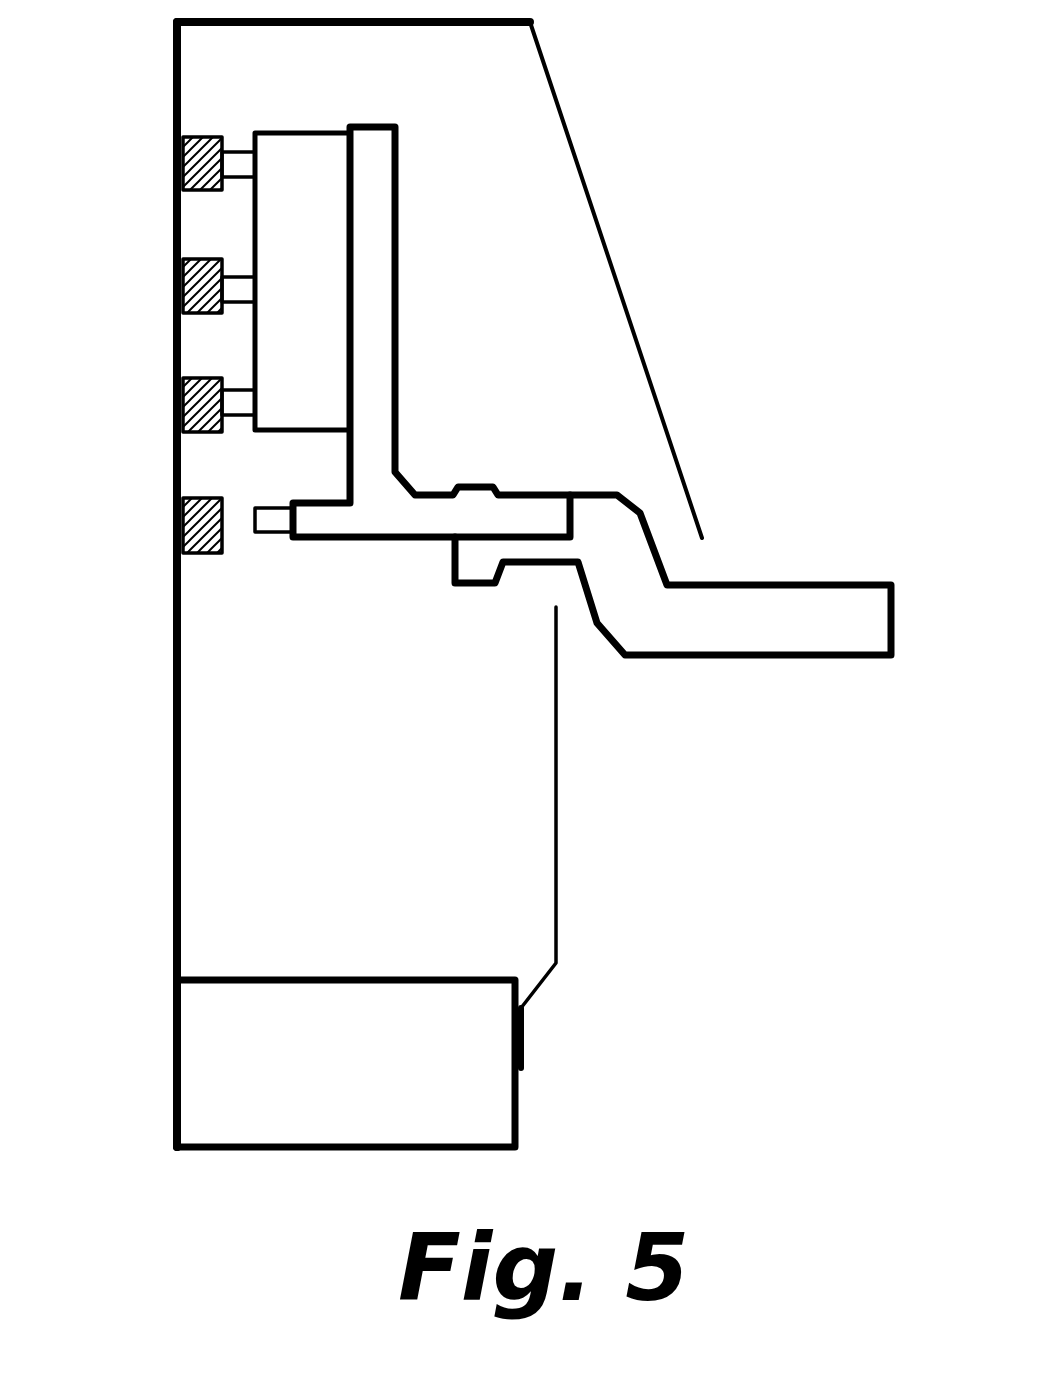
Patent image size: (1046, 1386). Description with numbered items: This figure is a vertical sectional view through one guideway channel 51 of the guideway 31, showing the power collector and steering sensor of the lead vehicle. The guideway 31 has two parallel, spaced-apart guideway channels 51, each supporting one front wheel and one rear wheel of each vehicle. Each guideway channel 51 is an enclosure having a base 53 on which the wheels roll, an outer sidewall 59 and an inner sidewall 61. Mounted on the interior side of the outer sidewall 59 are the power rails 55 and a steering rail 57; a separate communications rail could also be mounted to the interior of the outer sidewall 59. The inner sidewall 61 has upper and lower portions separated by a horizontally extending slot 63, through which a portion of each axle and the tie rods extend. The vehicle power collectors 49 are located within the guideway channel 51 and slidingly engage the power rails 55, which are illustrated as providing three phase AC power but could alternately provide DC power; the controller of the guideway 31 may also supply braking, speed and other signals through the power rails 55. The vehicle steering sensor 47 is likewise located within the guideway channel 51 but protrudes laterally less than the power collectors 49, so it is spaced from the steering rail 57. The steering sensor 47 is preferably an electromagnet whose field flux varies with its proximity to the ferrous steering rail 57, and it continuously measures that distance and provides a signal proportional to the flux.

The guideway 31 is at (680, 207).
The steering sensor 47 is at (272, 538).
The power collector 49 is at (318, 232).
The guideway channel 51 is at (205, 778).
The base 53 is at (388, 978).
The power rails 55 is at (178, 170).
The steering rail 57 is at (178, 525).
The outer sidewall 59 is at (174, 670).
The inner sidewall 61 is at (652, 380).
The slot 63 is at (576, 612).